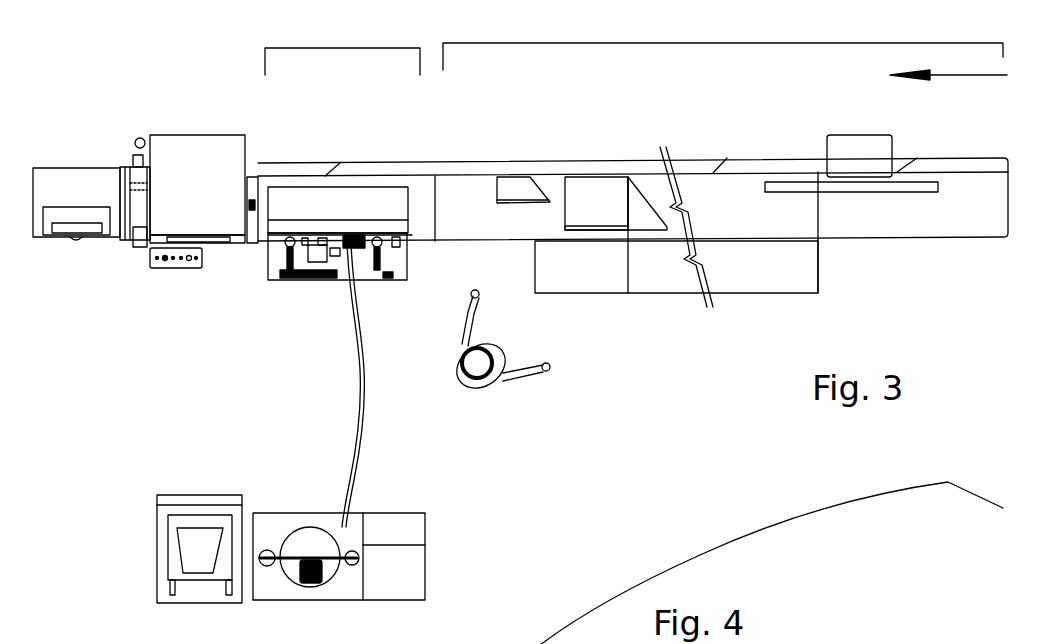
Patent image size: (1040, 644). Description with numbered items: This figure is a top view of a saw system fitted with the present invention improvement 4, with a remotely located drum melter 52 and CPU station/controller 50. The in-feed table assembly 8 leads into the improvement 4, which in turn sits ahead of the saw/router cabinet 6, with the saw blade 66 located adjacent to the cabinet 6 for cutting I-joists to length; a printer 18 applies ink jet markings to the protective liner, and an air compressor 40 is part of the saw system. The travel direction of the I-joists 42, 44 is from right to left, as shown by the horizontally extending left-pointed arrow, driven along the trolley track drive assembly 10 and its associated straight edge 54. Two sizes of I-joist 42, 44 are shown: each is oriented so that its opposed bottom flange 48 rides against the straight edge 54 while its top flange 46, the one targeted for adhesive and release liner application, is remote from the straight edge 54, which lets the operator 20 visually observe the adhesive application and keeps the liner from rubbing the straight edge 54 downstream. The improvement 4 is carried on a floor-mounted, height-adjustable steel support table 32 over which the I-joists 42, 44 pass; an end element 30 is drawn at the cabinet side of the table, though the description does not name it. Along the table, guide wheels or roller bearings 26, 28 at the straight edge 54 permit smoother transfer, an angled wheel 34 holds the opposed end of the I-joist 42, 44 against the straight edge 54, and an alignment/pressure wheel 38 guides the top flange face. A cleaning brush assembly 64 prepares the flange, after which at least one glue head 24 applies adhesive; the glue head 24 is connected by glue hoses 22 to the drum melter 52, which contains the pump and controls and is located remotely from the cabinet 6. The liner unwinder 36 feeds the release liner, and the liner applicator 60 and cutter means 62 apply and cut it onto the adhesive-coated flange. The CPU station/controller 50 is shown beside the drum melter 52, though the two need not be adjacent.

The present invention improvement 4 is at (348, 47).
The saw/router cabinet 6 is at (222, 150).
The in-feed table assembly 8 is at (668, 42).
The trolley track drive assembly 10 is at (920, 192).
The printer 18 is at (57, 183).
The operator 20 is at (493, 390).
The glue hoses 22 is at (355, 378).
The glue head 24 is at (377, 200).
The guide wheel/roller bearing 26 is at (370, 172).
The guide wheel/roller bearing 28 is at (289, 174).
The end block 30 is at (255, 173).
The support table 32 is at (275, 258).
The angled wheel 34 is at (294, 230).
The liner unwinder 36 is at (330, 283).
The alignment/pressure wheel 38 is at (384, 230).
The air compressor 40 is at (150, 130).
The I-joist 42 is at (588, 187).
The I-joist 44 is at (510, 190).
The top flange 46 is at (532, 208).
The bottom flange 48 is at (534, 172).
The CPU station/controller 50 is at (203, 595).
The drum melter 52 is at (309, 594).
The straight edge 54 is at (752, 162).
The liner applicator 60 is at (387, 294).
The liner cutter means 62 is at (333, 257).
The cleaning brush assembly 64 is at (401, 249).
The saw blade 66 is at (140, 242).